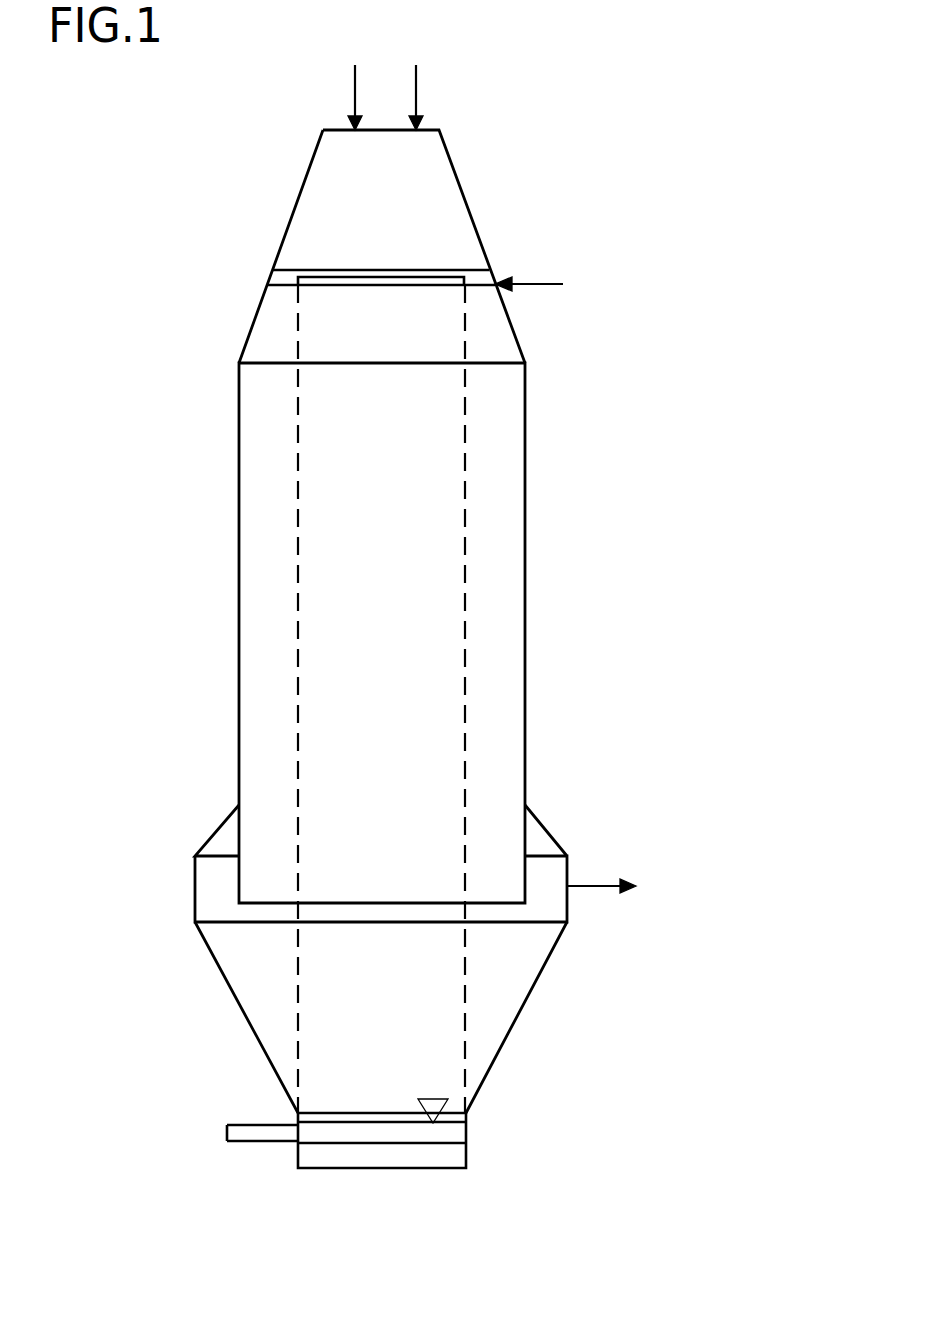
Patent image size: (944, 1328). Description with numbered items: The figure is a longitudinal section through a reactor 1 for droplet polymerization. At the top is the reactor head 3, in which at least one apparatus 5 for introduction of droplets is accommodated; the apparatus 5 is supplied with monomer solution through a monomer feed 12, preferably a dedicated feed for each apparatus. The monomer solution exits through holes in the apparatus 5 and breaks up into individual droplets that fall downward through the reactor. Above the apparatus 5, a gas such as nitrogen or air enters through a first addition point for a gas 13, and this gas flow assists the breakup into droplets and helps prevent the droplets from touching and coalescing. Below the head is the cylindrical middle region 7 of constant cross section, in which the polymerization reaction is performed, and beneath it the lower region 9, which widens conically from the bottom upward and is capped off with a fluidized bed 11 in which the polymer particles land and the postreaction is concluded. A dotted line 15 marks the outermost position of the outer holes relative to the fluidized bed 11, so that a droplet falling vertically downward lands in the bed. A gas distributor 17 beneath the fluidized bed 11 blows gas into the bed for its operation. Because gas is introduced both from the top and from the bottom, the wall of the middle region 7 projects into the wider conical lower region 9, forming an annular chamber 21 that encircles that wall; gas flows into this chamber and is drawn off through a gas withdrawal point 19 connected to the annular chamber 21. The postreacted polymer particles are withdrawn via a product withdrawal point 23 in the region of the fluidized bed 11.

The reactor 1 is at (197, 358).
The reactor head 3 is at (473, 210).
The apparatus for introduction of droplets 5 is at (320, 270).
The middle region 7 is at (525, 633).
The lower region 9 is at (522, 1015).
The fluidized bed 11 is at (466, 1128).
The monomer feed 12 is at (540, 283).
The first addition point for a gas 13 is at (416, 87).
The dotted line 15 is at (298, 486).
The gas distributor 17 is at (428, 1160).
The gas withdrawal point 19 is at (600, 888).
The annular chamber 21 is at (205, 884).
The product withdrawal point 23 is at (227, 1133).